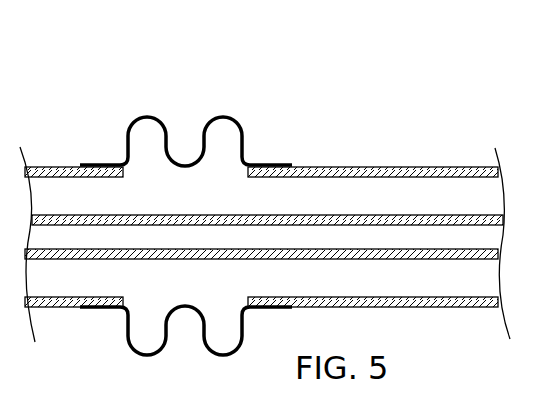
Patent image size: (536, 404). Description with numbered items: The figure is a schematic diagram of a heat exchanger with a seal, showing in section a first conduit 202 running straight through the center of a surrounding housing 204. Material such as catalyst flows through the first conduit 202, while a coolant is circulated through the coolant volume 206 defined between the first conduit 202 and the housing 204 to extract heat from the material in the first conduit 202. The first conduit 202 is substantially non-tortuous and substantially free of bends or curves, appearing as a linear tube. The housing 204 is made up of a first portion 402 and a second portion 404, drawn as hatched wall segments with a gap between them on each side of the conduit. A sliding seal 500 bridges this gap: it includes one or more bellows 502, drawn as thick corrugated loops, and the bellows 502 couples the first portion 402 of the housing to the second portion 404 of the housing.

The first conduit 202 is at (276, 215).
The housing 204 is at (411, 166).
The coolant volume 206 is at (321, 285).
The first portion of the housing 402 is at (52, 164).
The second portion of the housing 404 is at (333, 166).
The sliding seal 500 is at (197, 193).
The bellows 502 is at (246, 130).